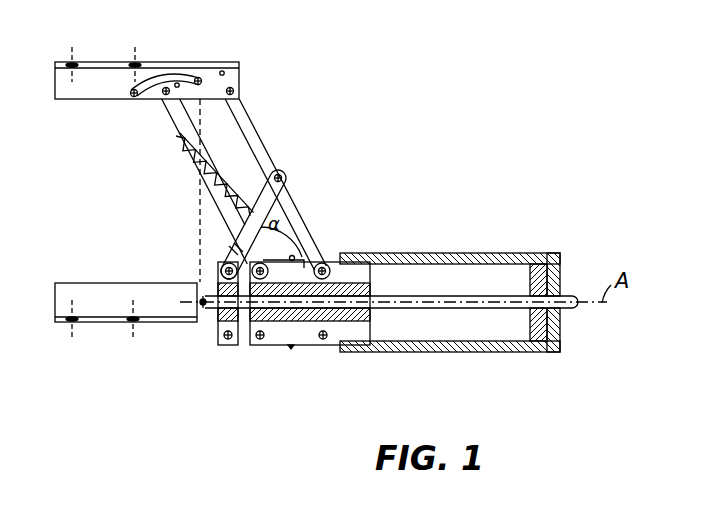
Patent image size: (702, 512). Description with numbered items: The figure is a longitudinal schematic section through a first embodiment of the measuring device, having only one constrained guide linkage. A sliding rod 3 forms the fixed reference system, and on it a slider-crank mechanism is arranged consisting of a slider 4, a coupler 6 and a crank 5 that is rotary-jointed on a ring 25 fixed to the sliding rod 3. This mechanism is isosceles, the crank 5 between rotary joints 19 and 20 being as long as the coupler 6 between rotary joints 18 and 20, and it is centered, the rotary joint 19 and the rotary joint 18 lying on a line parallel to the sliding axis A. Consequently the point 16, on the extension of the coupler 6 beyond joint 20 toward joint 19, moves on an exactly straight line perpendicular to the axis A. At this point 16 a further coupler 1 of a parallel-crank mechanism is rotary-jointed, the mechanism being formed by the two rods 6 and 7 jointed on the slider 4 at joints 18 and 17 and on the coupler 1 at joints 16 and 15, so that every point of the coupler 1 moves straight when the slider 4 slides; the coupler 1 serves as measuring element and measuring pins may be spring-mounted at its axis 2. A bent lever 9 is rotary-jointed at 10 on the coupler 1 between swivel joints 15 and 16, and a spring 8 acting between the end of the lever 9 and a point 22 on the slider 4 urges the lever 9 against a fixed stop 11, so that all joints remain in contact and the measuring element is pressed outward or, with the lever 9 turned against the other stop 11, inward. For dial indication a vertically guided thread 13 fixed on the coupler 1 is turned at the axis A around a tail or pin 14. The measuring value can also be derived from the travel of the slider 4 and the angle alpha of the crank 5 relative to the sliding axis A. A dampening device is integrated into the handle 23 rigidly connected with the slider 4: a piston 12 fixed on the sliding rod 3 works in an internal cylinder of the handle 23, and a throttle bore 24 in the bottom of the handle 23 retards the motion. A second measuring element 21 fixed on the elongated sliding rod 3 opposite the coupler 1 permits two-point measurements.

The coupler 1 is at (102, 90).
The axis 2 is at (137, 59).
The sliding rod 3 is at (436, 298).
The slider 4 is at (373, 279).
The crank 5 is at (264, 198).
The coupler 6 is at (256, 137).
The rod 7 is at (193, 138).
The spring 8 is at (173, 133).
The lever 9 is at (155, 82).
The rotary joint 10 is at (200, 78).
The fixed stop 11 is at (179, 83).
The piston 12 is at (531, 268).
The thread 13 is at (199, 233).
The tail or pin 14 is at (203, 312).
The swivel joint 15 is at (163, 95).
The coupler point 16 is at (236, 91).
The swivel joint 17 is at (262, 264).
The rotary joint 18 is at (325, 263).
The rotary joint 19 is at (228, 263).
The rotary joint 20 is at (283, 179).
The second measuring element 21 is at (106, 268).
The spring application point 22 is at (283, 270).
The handle 23 is at (468, 254).
The throttle bore 24 is at (556, 276).
The ring 25 is at (226, 347).